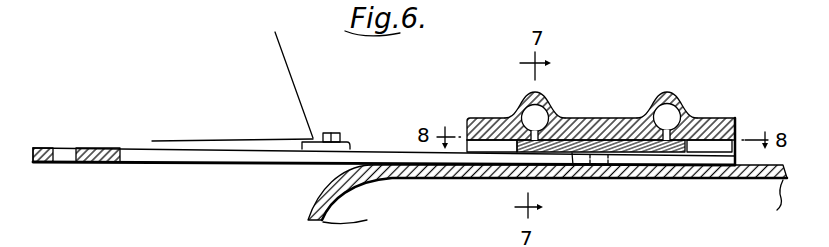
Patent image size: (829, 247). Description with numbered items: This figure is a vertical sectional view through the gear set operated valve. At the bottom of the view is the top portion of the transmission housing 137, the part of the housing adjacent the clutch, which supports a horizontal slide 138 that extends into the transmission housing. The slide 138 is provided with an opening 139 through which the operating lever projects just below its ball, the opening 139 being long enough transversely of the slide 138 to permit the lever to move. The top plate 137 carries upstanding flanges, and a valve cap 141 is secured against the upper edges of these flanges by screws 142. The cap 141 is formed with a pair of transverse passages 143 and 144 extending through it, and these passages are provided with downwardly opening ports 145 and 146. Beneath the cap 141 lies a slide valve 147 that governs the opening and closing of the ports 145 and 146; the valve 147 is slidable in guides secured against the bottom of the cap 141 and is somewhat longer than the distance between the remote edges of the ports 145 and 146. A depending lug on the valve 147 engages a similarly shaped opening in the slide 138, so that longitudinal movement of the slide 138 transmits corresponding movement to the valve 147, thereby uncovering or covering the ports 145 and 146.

The top portion of the transmission housing 137 is at (397, 178).
The horizontal slide 138 is at (371, 160).
The opening 139 is at (68, 147).
The valve cap 141 is at (602, 117).
The screws 142 is at (487, 117).
The transverse passage 143 is at (540, 110).
The transverse passage 144 is at (668, 112).
The port 145 is at (522, 110).
The port 146 is at (652, 117).
The slide valve 147 is at (573, 166).